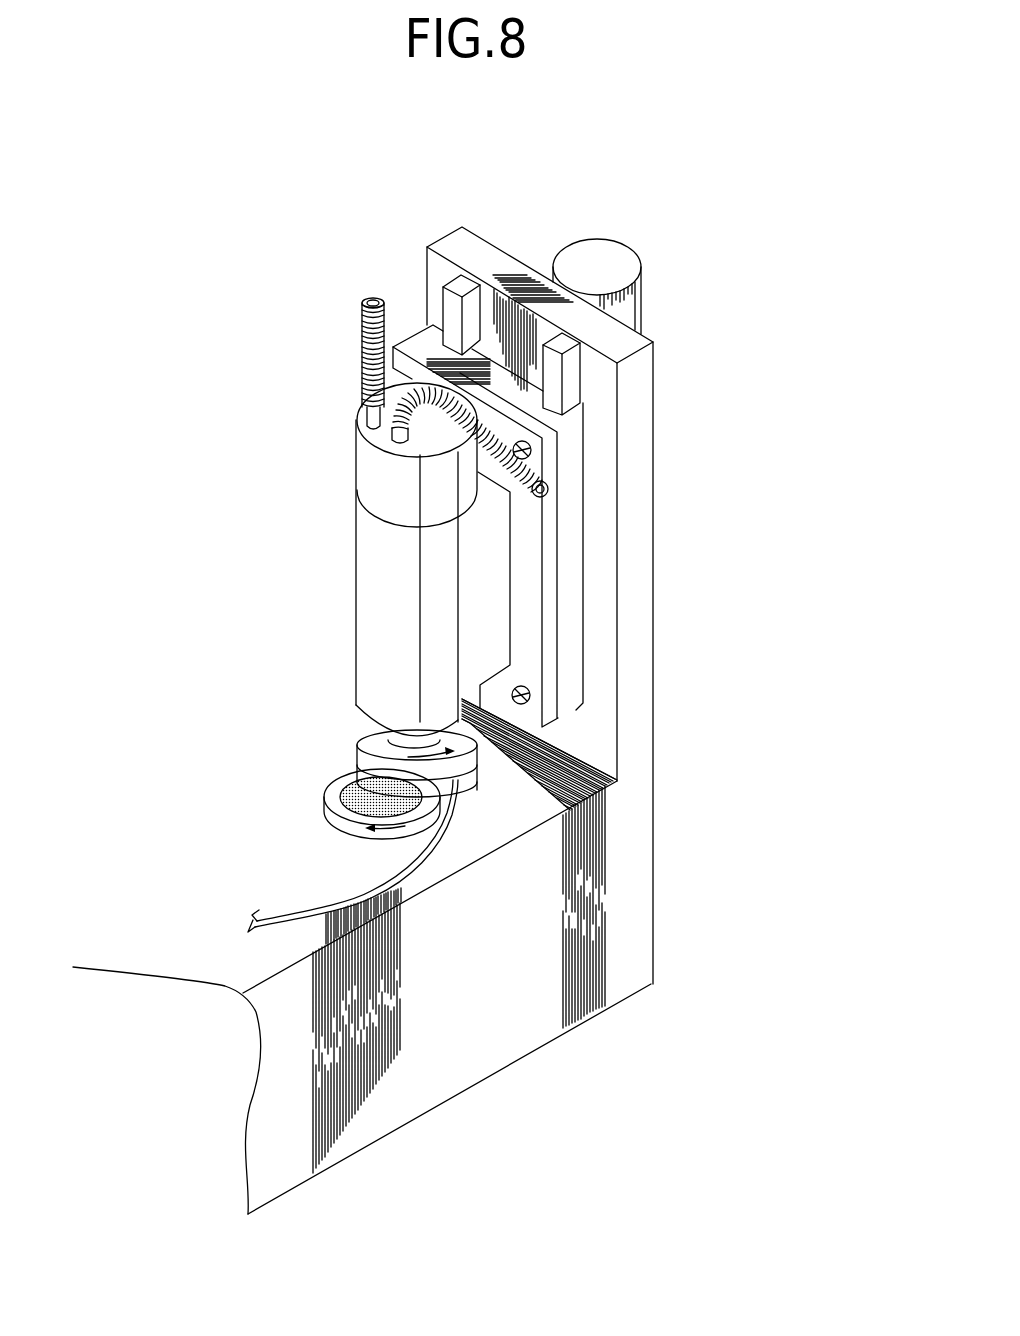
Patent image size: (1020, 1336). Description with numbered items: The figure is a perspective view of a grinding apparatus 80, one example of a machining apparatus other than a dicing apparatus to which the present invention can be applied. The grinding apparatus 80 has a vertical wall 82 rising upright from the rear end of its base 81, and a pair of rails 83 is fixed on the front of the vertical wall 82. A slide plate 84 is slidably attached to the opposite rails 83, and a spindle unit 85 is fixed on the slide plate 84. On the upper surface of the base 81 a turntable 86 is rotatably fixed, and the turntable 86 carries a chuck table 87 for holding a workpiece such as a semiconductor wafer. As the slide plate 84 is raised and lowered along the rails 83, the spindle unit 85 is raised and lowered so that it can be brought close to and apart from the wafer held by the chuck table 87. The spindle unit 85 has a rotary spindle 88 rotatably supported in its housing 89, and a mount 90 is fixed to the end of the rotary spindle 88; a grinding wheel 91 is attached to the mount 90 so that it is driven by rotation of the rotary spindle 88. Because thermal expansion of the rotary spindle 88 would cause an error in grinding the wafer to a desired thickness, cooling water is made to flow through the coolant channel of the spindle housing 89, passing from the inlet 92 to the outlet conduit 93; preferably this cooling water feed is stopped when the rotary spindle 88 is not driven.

The grinding apparatus 80 is at (703, 300).
The base 81 is at (580, 790).
The vertical wall 82 is at (653, 652).
The rails 83 is at (407, 308).
The slide plate 84 is at (583, 466).
The spindle unit 85 is at (293, 555).
The turntable 86 is at (397, 900).
The chuck table 87 is at (347, 823).
The rotary spindle 88 is at (353, 755).
The spindle housing 89 is at (365, 668).
The mount 90 is at (358, 742).
The grinding wheel 91 is at (473, 776).
The inlet 92 is at (366, 350).
The outlet conduit 93 is at (500, 496).